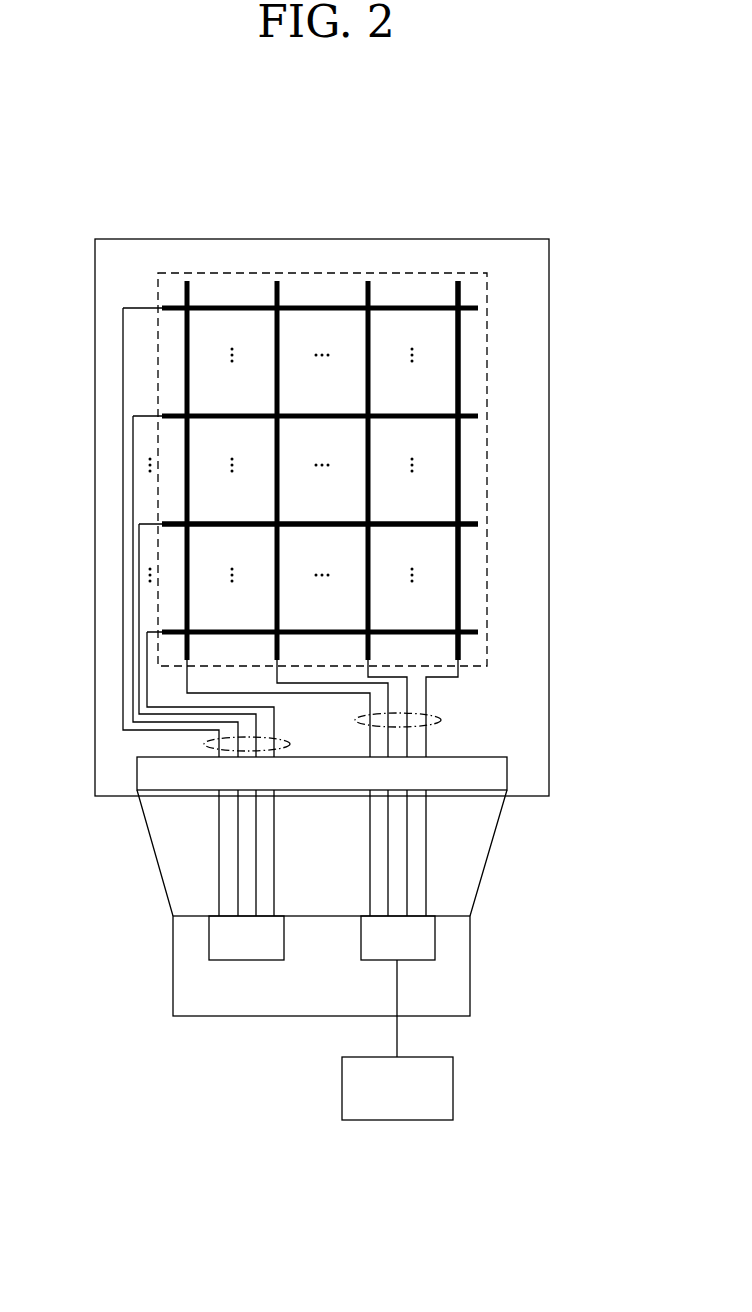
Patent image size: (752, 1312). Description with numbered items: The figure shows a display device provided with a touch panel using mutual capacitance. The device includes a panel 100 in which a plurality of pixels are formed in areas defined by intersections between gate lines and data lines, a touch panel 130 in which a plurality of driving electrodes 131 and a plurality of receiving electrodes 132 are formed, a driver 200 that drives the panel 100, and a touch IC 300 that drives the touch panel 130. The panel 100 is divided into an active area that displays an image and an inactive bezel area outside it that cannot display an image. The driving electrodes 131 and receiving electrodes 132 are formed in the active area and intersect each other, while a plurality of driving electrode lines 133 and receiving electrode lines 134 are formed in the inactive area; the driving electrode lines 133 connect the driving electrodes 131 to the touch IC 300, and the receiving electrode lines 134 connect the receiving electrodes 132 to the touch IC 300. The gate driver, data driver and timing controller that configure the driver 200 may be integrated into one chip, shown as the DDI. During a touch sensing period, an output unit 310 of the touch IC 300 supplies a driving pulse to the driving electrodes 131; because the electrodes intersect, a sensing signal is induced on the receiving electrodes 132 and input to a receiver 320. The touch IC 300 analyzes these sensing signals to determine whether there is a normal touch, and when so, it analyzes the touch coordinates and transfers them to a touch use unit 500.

The panel 100 is at (262, 239).
The touch panel 130 is at (487, 356).
The driving electrodes 131 is at (218, 520).
The receiving electrodes 132 is at (460, 575).
The driving electrode lines 133 is at (213, 740).
The receiving electrode lines 134 is at (430, 714).
The driver 200 is at (508, 770).
The touch IC 300 is at (472, 970).
The output unit 310 is at (246, 938).
The receiver 320 is at (398, 938).
The touch use unit 500 is at (397, 1040).